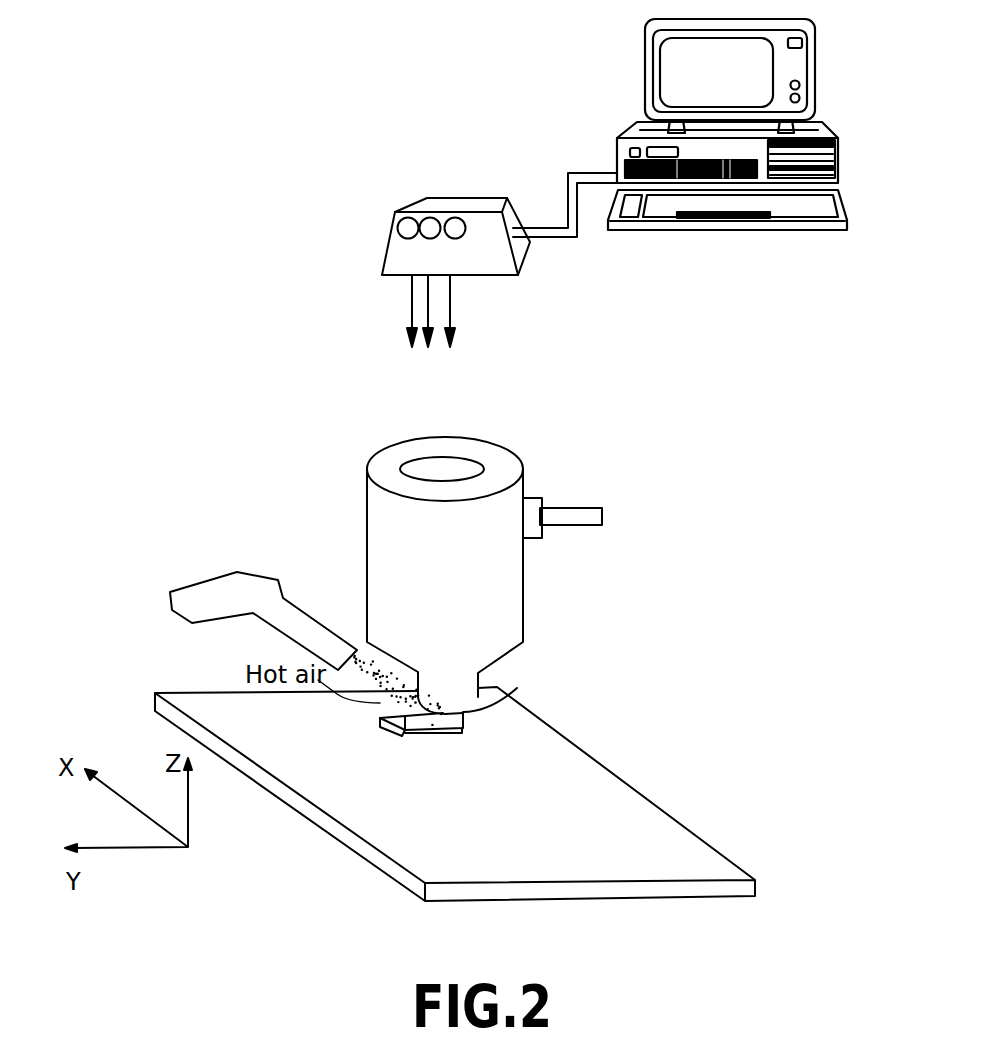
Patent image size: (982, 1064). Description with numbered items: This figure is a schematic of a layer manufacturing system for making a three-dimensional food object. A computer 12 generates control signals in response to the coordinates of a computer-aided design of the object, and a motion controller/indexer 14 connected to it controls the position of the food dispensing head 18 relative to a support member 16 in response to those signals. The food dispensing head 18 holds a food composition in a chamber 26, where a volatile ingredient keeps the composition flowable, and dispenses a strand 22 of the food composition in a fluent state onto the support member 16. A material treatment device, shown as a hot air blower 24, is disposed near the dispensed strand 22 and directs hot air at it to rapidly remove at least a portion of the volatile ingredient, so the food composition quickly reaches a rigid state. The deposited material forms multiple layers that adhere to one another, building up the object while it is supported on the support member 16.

The computer 12 is at (617, 167).
The motion controller/indexer 14 is at (423, 205).
The support member 16 is at (537, 743).
The food dispensing head 18 is at (522, 597).
The strand of food composition 22 is at (506, 700).
The hot air blower 24 is at (247, 583).
The chamber 26 is at (445, 472).